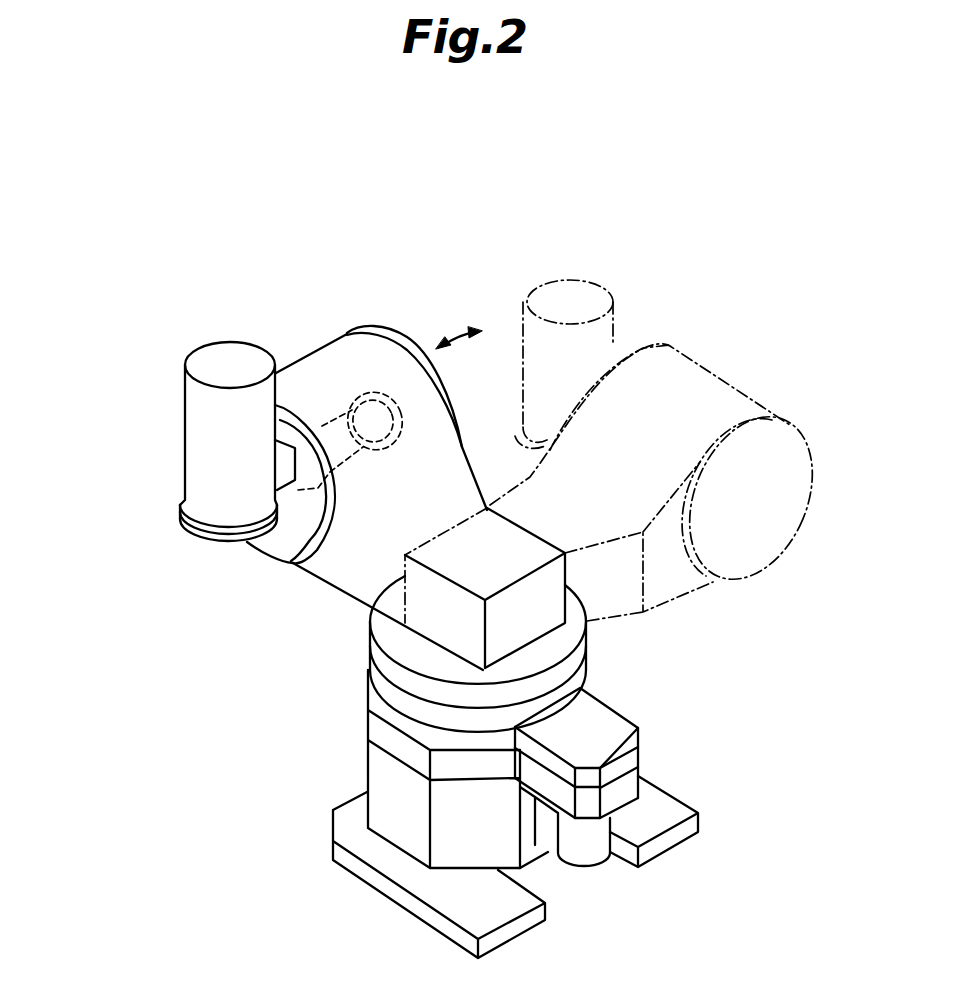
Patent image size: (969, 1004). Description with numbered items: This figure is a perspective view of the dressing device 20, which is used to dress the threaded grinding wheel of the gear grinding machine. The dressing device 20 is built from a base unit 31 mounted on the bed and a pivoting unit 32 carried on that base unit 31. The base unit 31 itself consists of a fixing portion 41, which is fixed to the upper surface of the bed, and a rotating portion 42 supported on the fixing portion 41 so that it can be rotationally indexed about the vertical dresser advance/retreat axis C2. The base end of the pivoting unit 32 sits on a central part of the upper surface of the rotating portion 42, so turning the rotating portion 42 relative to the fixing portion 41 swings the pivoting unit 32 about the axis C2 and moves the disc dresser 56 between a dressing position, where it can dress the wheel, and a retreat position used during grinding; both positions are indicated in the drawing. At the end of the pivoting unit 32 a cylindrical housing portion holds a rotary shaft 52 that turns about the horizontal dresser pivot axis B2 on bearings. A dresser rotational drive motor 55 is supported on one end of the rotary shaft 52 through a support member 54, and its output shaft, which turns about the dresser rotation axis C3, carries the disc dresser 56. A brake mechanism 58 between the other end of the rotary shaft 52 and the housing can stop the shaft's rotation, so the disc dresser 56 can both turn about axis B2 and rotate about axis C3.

The dressing device 20 is at (387, 258).
The base unit 31 is at (329, 823).
The pivoting unit 32 is at (351, 604).
The fixing portion 41 is at (623, 727).
The rotating portion 42 is at (567, 645).
The rotary shaft 52 is at (298, 490).
The support member 54 is at (291, 488).
The dresser rotational drive motor 55 is at (188, 466).
The disc dresser 56 is at (545, 453).
The brake mechanism 58 is at (358, 402).
The dresser pivot axis B2 is at (488, 366).
The dresser advance/retreat axis C2 is at (490, 555).
The dresser rotation axis C3 is at (231, 342).